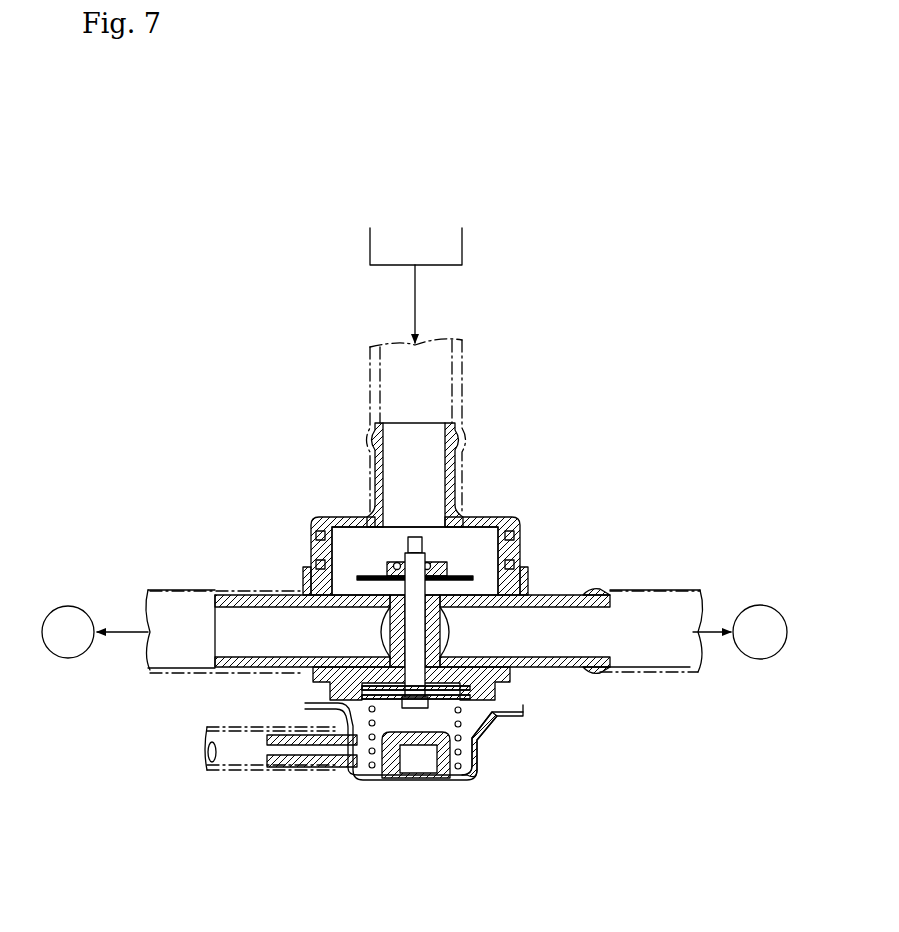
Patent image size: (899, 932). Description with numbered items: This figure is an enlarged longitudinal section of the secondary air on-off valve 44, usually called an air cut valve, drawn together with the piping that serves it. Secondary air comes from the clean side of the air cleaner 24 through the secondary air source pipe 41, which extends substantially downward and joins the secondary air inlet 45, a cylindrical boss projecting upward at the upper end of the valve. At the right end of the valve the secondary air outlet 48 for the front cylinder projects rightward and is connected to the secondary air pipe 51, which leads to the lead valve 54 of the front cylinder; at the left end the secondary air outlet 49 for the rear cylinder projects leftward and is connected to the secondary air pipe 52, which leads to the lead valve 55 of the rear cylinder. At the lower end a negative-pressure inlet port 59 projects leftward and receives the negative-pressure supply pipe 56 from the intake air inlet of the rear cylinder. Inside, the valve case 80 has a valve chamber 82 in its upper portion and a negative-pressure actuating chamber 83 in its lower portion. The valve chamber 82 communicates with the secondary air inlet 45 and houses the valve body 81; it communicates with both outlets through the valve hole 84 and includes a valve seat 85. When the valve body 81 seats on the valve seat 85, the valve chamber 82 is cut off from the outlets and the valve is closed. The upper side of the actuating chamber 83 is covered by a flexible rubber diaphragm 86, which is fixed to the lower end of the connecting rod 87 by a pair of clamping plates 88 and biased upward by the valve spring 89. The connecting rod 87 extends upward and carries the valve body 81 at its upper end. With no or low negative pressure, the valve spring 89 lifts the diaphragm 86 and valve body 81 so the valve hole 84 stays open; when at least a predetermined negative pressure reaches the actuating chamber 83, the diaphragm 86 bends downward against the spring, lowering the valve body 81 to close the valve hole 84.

The air cleaner 24 is at (370, 240).
The secondary air source pipe 41 is at (463, 355).
The secondary air on-off valve 44 is at (166, 475).
The secondary air inlet 45 is at (453, 450).
The secondary air outlet 48 is at (583, 662).
The secondary air outlet 49 is at (243, 617).
The secondary air pipe 51 is at (645, 590).
The secondary air pipe 52 is at (173, 675).
The lead valve 54 is at (758, 659).
The lead valve 55 is at (66, 658).
The negative-pressure supply pipe 56 is at (262, 773).
The negative-pressure inlet port 59 is at (307, 757).
The valve case 80 is at (515, 520).
The valve body 81 is at (330, 565).
The valve chamber 82 is at (360, 542).
The negative-pressure actuating chamber 83 is at (472, 743).
The valve hole 84 is at (447, 607).
The valve seat 85 is at (497, 578).
The diaphragm 86 is at (480, 738).
The connecting rod 87 is at (410, 640).
The clamping plates 88 is at (402, 708).
The valve spring 89 is at (470, 763).